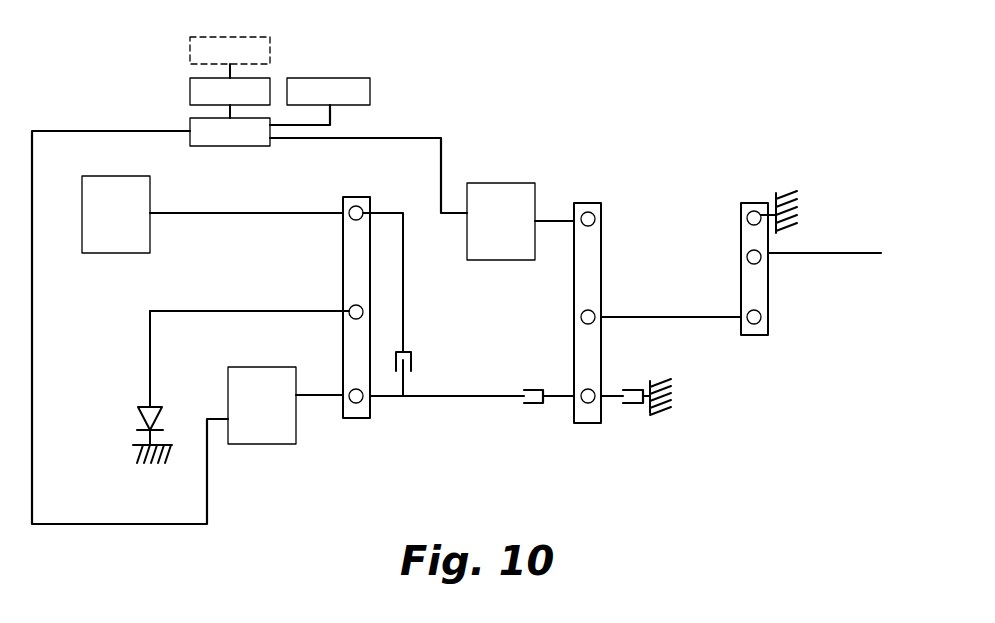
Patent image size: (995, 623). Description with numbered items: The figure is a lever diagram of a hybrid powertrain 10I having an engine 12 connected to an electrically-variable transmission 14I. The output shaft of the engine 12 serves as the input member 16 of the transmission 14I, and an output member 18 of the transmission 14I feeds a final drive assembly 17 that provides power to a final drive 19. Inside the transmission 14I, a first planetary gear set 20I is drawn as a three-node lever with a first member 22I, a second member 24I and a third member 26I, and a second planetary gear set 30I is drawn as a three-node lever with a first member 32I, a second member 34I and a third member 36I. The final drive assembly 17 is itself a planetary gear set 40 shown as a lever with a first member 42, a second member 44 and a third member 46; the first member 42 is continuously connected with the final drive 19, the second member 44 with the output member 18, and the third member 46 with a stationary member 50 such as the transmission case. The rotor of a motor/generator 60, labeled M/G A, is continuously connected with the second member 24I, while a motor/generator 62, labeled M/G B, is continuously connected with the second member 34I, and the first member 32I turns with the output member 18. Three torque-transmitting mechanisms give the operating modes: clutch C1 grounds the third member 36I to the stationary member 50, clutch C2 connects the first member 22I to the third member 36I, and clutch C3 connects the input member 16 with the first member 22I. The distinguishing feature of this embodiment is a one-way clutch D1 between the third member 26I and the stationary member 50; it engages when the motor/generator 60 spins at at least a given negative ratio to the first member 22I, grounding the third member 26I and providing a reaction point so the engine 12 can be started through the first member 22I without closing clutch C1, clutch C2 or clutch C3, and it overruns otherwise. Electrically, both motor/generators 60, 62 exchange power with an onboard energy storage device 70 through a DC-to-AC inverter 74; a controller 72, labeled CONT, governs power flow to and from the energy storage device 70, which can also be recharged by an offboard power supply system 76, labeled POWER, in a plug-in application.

The powertrain 10I is at (828, 207).
The engine 12 is at (116, 214).
The transmission 14I is at (112, 108).
The input member 16 is at (222, 214).
The final drive assembly 17 is at (722, 218).
The output member 18 is at (688, 318).
The final drive 19 is at (846, 256).
The first planetary gear set 20I is at (343, 255).
The first member 22I is at (352, 206).
The second member 24I is at (356, 404).
The third member 26I is at (349, 310).
The second planetary gear set 30I is at (601, 240).
The first member 32I is at (601, 315).
The second member 34I is at (586, 212).
The third member 36I is at (588, 404).
The planetary gear set 40 is at (741, 244).
The first member 42 is at (761, 257).
The second member 44 is at (761, 318).
The third member 46 is at (752, 211).
The stationary member 50 is at (135, 462).
The motor/generator 60 is at (262, 445).
The motor/generator 62 is at (500, 183).
The energy storage device 70 is at (190, 82).
The controller 72 is at (328, 78).
The power inverter 74 is at (190, 120).
The offboard power supply system 76 is at (225, 35).
The torque-transmitting mechanism C1 is at (641, 382).
The torque-transmitting mechanism C2 is at (530, 382).
The torque-transmitting mechanism C3 is at (423, 370).
The one-way clutch D1 is at (130, 422).